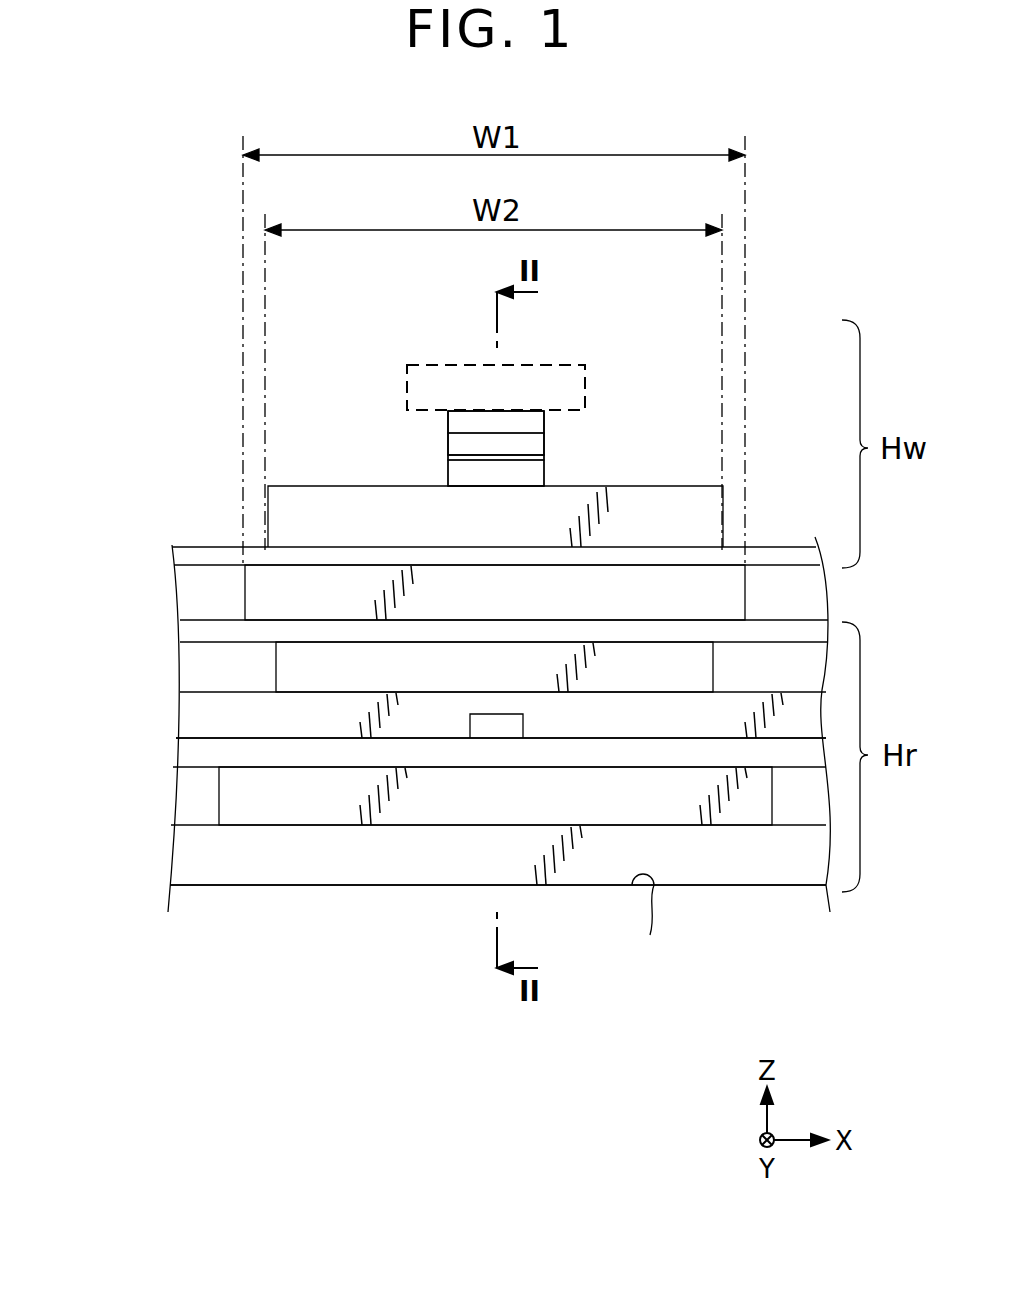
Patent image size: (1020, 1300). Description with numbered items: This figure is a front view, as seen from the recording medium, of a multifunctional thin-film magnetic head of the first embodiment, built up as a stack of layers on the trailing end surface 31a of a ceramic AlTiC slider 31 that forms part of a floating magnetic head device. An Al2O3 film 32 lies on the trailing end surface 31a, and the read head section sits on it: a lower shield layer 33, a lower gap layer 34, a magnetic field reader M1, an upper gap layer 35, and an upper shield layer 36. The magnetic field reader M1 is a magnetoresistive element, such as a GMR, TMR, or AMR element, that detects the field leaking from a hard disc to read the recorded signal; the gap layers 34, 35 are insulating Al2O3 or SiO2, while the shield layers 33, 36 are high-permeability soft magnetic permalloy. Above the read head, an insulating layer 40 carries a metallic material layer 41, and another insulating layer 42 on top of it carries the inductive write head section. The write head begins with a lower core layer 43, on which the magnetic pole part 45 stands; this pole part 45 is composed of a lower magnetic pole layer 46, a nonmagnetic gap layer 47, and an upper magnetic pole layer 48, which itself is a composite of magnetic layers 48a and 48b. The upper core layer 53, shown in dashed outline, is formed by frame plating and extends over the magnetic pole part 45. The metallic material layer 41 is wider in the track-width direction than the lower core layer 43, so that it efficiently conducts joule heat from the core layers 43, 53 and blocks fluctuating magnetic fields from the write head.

The slider 31 is at (768, 902).
The trailing end surface 31a is at (656, 925).
The Al2O3 film 32 is at (185, 856).
The lower shield layer 33 is at (242, 800).
The lower gap layer 34 is at (185, 752).
The magnetic field reader M1 is at (485, 724).
The upper gap layer 35 is at (195, 712).
The upper shield layer 36 is at (290, 668).
The insulating layer 40 is at (195, 630).
The metallic material layer 41 is at (255, 598).
The insulating layer 42 is at (185, 554).
The lower core layer 43 is at (268, 519).
The magnetic pole part 45 is at (290, 432).
The lower magnetic pole layer 46 is at (463, 471).
The nonmagnetic gap layer 47 is at (463, 457).
The upper magnetic pole layer 48 is at (318, 408).
The magnetic layer 48a is at (463, 443).
The magnetic layer 48b is at (463, 422).
The upper core layer 53 is at (572, 364).